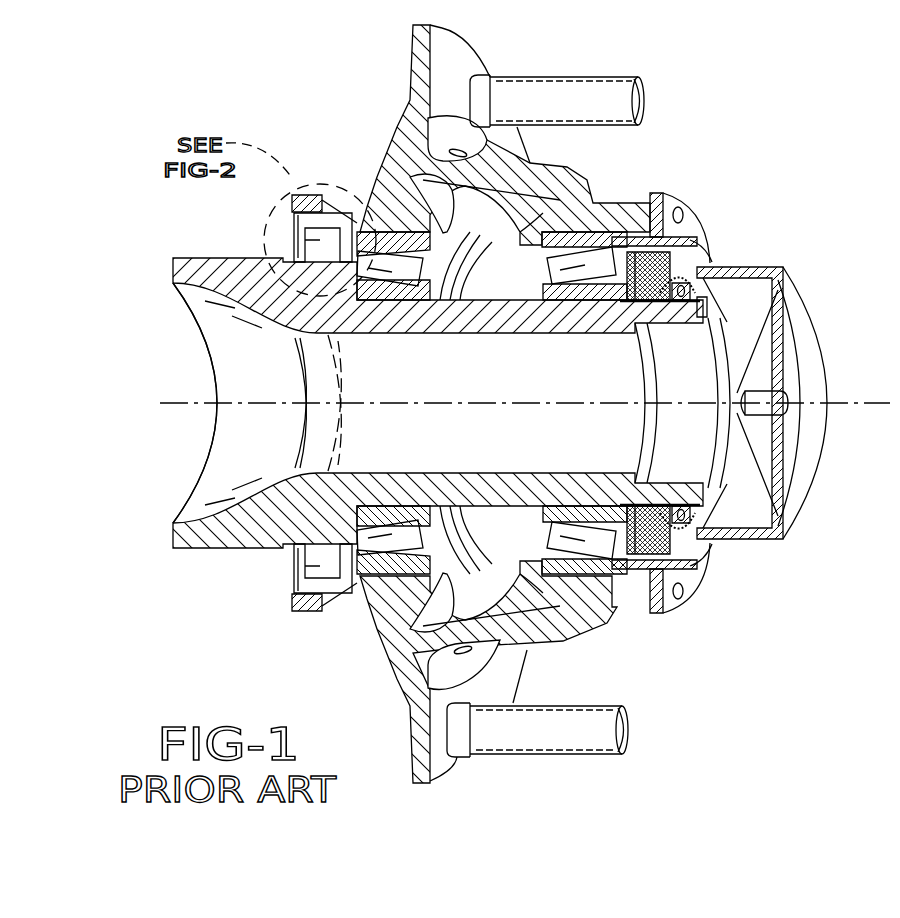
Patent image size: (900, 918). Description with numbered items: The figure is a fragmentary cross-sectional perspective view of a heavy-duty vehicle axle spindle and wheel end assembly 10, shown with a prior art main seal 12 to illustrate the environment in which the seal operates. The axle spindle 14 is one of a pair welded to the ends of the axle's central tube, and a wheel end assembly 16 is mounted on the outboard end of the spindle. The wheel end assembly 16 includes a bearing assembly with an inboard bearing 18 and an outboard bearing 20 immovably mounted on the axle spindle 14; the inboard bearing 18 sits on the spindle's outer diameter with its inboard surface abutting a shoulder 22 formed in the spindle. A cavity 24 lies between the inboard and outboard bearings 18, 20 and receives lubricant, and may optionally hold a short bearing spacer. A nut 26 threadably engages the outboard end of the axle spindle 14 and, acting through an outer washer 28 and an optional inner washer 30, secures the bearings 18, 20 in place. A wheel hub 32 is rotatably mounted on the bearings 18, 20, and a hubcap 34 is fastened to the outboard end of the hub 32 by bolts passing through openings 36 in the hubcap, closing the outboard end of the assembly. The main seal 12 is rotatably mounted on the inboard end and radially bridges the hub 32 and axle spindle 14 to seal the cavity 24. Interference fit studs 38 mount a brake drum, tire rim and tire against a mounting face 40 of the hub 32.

The axle spindle and wheel end assembly 10 is at (78, 152).
The main seal 12 is at (298, 581).
The axle spindle 14 is at (232, 258).
The wheel end assembly 16 is at (405, 42).
The inboard bearing 18 is at (383, 293).
The outboard bearing 20 is at (593, 290).
The shoulder 22 is at (353, 280).
The cavity 24 is at (530, 575).
The nut 26 is at (663, 547).
The outer washer 28 is at (683, 517).
The inner washer 30 is at (635, 533).
The wheel hub 32 is at (630, 200).
The hubcap 34 is at (763, 270).
The openings 36 is at (690, 215).
The interference fit studs 38 is at (590, 70).
The mounting face 40 is at (452, 50).